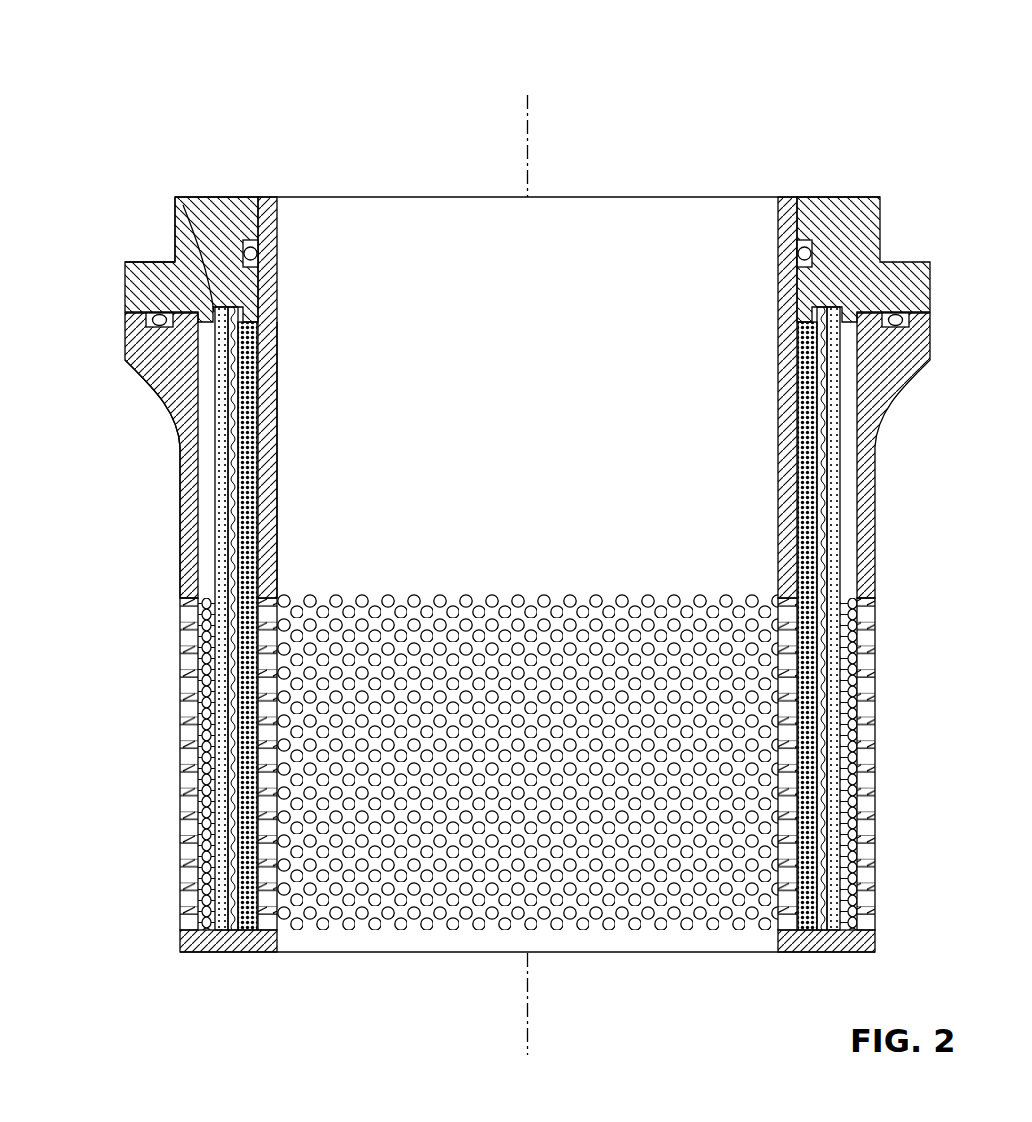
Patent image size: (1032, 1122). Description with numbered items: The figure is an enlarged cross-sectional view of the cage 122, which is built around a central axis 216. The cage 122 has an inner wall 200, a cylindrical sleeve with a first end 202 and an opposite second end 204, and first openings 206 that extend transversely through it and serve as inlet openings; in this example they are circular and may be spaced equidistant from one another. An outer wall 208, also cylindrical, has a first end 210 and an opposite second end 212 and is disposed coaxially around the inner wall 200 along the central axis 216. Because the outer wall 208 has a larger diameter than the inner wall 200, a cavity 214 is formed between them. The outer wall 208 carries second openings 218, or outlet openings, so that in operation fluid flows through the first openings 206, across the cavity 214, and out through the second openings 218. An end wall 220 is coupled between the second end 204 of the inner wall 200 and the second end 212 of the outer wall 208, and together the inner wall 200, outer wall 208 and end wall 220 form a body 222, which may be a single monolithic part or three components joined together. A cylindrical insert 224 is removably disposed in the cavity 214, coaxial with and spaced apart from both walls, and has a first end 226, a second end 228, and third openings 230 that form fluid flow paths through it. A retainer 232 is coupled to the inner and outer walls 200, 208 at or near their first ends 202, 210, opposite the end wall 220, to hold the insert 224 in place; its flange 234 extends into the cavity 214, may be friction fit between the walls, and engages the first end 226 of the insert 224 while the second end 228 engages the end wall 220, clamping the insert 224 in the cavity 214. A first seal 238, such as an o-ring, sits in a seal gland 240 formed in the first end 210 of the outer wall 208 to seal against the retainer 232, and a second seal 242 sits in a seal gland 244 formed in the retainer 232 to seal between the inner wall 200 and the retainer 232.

The cage 122 is at (128, 56).
The inner wall 200 is at (265, 478).
The first end 202 is at (266, 205).
The second end 204 is at (268, 953).
The first openings 206 is at (365, 598).
The outer wall 208 is at (188, 530).
The first end 210 is at (125, 300).
The second end 212 is at (193, 952).
The cavity 214 is at (207, 579).
The central axis 216 is at (530, 150).
The second openings 218 is at (191, 633).
The end wall 220 is at (226, 953).
The body 222 is at (168, 378).
The insert 224 is at (222, 673).
The first end 226 is at (101, 229).
The second end 228 is at (244, 953).
The third openings 230 is at (203, 752).
The retainer 232 is at (186, 215).
The flange 234 is at (200, 256).
The first seal 238 is at (146, 320).
The seal gland 240 is at (143, 344).
The second seal 242 is at (258, 255).
The seal gland 244 is at (260, 244).